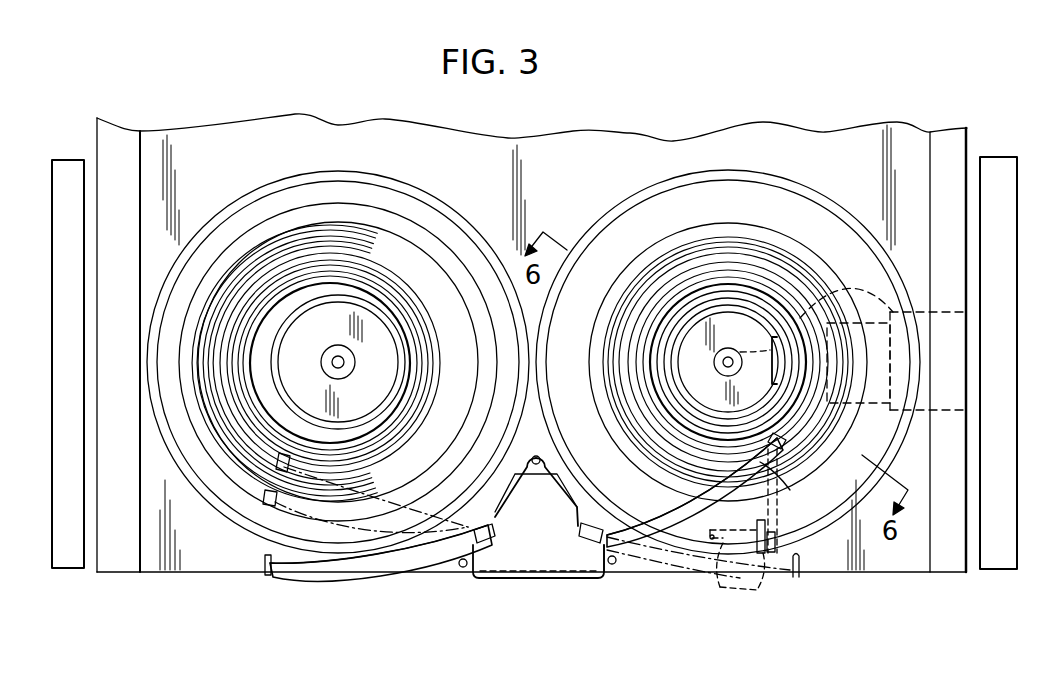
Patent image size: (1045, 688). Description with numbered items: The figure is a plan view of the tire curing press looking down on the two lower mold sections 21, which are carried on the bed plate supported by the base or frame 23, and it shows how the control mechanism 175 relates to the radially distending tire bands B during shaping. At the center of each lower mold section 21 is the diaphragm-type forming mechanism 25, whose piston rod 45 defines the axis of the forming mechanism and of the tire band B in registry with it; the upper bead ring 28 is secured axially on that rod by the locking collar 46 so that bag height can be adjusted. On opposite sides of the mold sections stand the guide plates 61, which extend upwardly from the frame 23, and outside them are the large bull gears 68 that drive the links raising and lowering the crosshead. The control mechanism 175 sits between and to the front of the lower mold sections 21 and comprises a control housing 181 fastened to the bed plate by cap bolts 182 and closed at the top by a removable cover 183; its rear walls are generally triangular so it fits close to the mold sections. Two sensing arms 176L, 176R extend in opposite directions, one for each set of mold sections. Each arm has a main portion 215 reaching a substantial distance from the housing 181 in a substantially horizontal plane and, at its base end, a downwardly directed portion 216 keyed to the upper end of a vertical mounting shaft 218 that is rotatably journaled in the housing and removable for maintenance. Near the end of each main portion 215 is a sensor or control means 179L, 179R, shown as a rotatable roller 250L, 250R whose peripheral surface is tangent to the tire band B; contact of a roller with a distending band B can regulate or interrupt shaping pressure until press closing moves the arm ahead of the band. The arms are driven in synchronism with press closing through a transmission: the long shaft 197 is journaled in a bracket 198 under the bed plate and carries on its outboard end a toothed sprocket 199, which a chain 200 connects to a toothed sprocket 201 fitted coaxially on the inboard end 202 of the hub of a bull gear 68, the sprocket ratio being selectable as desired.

The base or frame 23 is at (748, 137).
The bull gear 68 is at (52, 413).
The lower mold section 21 is at (452, 228).
The forming mechanism 25 is at (330, 303).
The upper bead ring 28 is at (370, 305).
The piston rod 45 is at (340, 372).
The locking collar 46 is at (336, 356).
The toothed sprocket 201 is at (747, 353).
The inboard end of the hub of the bull gear 202 is at (883, 333).
The tire band B is at (440, 418).
The control mechanism 175 is at (542, 584).
The removable cover 183 is at (570, 560).
The downwardly directed portion 216 is at (497, 540).
The control housing 181 is at (606, 578).
The cap bolts 182 is at (466, 568).
The vertical mounting shaft 218 is at (494, 542).
The rotatable roller 250L is at (266, 575).
The rotatable roller 250R is at (800, 450).
The sensor or control means 179L is at (275, 585).
The sensor or control means 179R is at (766, 466).
The main portion 215 is at (407, 556).
The sensing arm 176L is at (440, 576).
The sensing arm 176R is at (712, 492).
The chain 200 is at (795, 475).
The toothed sprocket 199 is at (776, 538).
The long shaft 197 is at (725, 579).
The bracket 198 is at (770, 590).
The guide plates 61 is at (118, 574).